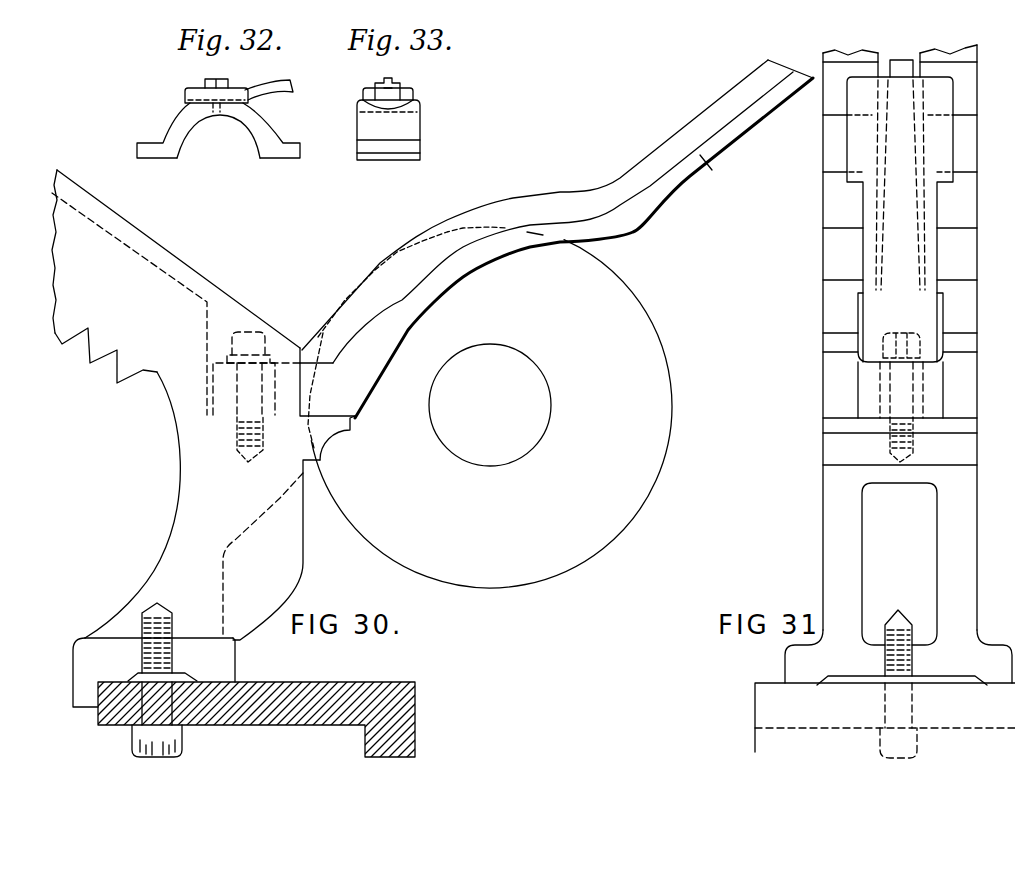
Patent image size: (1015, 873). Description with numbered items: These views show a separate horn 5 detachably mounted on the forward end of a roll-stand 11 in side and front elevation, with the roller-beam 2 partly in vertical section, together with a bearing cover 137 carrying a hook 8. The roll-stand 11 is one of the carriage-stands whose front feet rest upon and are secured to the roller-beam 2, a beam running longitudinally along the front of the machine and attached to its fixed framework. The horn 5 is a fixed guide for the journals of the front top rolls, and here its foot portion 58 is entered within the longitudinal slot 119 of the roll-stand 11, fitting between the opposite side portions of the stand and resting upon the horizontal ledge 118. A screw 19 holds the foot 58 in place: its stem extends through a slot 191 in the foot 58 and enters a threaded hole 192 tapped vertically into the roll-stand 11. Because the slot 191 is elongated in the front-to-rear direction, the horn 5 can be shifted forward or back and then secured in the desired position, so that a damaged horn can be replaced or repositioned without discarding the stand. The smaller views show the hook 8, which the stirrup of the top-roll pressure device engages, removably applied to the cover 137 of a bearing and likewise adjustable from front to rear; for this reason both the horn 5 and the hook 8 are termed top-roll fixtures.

In FIG. 30, the roller-beam 2 is at (375, 682).
In FIG. 31, the roller-beam 2 is at (768, 680).
In FIG. 30, the horn 5 is at (637, 240).
In FIG. 31, the horn 5 is at (927, 202).
In FIG. 32, the hook 8 is at (279, 88).
In FIG. 33, the hook 8 is at (402, 89).
In FIG. 30, the roll-stand 11 is at (57, 274).
In FIG. 31, the roll-stand 11 is at (978, 260).
In FIG. 30, the screw 19 is at (258, 332).
In FIG. 30, the foot portion of the horn 58 is at (345, 392).
In FIG. 30, the horizontal ledge 118 is at (192, 417).
In FIG. 31, the longitudinal slot 119 is at (897, 55).
In FIG. 32, the cover 137 is at (263, 130).
In FIG. 33, the cover 137 is at (421, 129).
In FIG. 30, the slot 191 is at (290, 415).
In FIG. 30, the threaded hole 192 is at (243, 445).